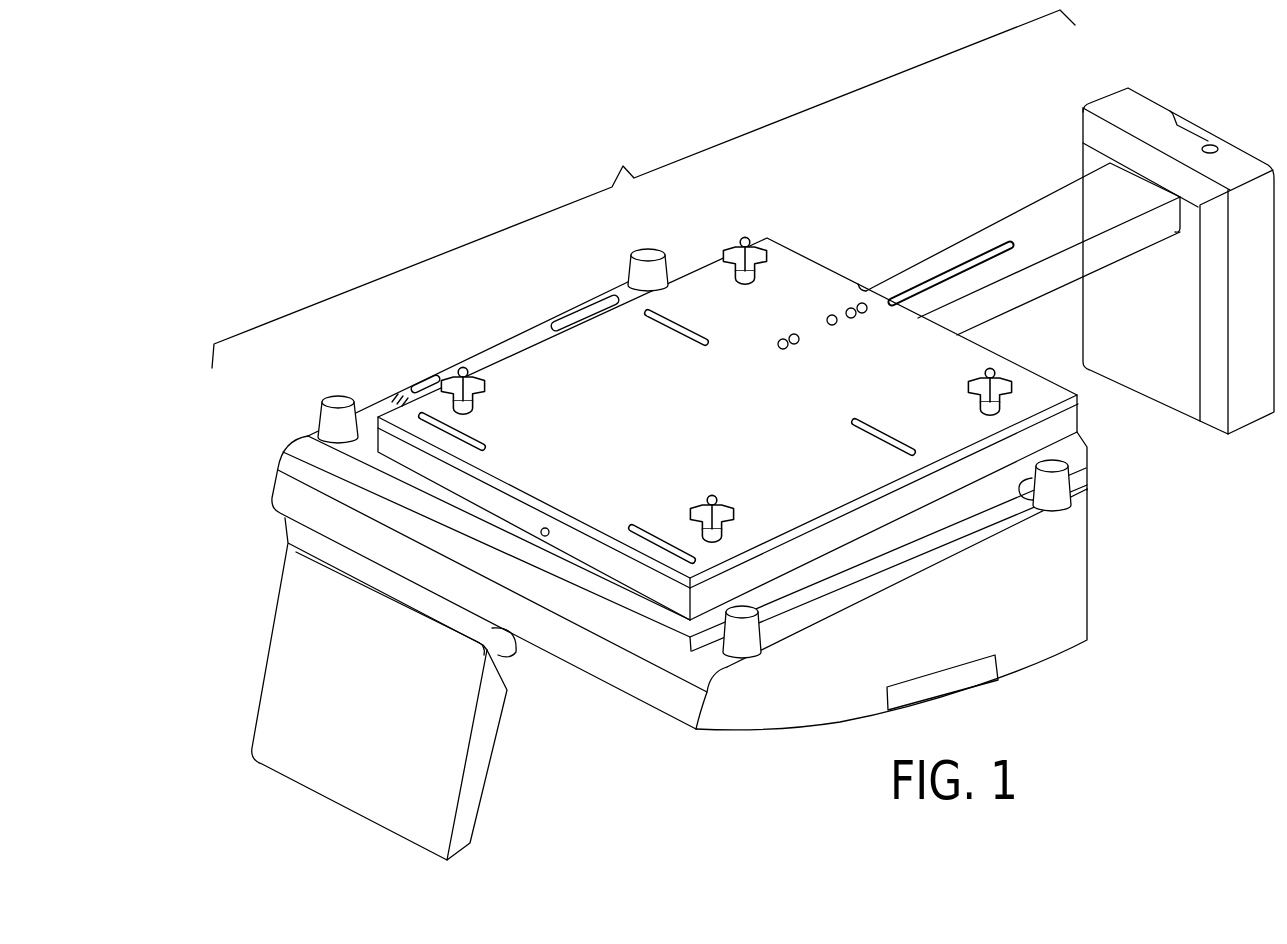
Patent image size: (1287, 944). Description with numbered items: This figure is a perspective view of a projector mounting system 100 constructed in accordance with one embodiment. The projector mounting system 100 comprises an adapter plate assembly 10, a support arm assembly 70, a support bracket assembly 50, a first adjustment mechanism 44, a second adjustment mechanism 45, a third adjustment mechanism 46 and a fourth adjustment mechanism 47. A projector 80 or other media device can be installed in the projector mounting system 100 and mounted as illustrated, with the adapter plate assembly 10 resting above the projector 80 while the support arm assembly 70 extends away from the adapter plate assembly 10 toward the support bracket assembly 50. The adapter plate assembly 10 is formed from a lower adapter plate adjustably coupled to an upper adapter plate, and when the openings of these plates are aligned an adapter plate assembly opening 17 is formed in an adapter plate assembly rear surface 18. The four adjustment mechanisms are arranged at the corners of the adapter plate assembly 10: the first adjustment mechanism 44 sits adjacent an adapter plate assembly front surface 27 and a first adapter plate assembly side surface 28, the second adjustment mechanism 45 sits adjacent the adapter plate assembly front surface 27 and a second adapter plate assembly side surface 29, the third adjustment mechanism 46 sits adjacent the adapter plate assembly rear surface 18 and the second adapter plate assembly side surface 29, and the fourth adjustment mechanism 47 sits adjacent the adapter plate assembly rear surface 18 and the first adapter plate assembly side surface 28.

The projector mounting system 100 is at (643, 189).
The adapter plate assembly 10 is at (785, 240).
The adapter plate assembly opening 17 is at (865, 290).
The adapter plate assembly rear surface 18 is at (1057, 383).
The adapter plate assembly front surface 27 is at (408, 453).
The first adapter plate assembly side surface 28 is at (777, 560).
The second adapter plate assembly side surface 29 is at (520, 348).
The first adjustment mechanism 44 is at (705, 503).
The second adjustment mechanism 45 is at (455, 378).
The third adjustment mechanism 46 is at (745, 243).
The fourth adjustment mechanism 47 is at (968, 378).
The support bracket assembly 50 is at (1115, 110).
The support arm assembly 70 is at (985, 222).
The projector 80 is at (1070, 578).